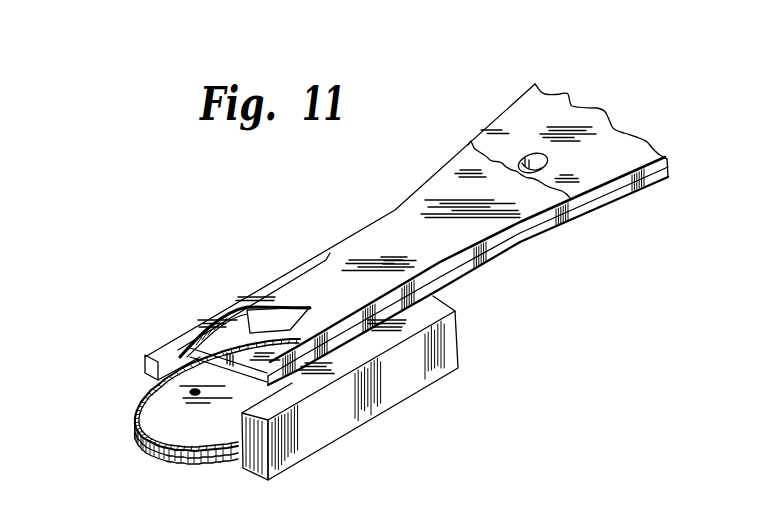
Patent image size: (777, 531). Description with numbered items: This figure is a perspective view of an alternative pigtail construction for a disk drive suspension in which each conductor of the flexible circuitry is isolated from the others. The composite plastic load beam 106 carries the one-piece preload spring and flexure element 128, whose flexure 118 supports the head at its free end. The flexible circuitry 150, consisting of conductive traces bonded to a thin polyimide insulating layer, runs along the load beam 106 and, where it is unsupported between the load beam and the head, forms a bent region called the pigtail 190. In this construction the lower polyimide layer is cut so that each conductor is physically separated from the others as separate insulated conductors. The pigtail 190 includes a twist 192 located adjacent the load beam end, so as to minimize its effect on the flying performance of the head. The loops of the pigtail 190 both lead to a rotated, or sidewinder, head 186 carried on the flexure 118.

The load beam 106 is at (498, 117).
The flexible circuitry 150 is at (378, 222).
The preload spring and flexure element 128 is at (614, 212).
The rotated or sidewinder head 186 is at (413, 393).
The flexure 118 is at (180, 363).
The twist 192 is at (250, 340).
The pigtail 190 is at (130, 412).